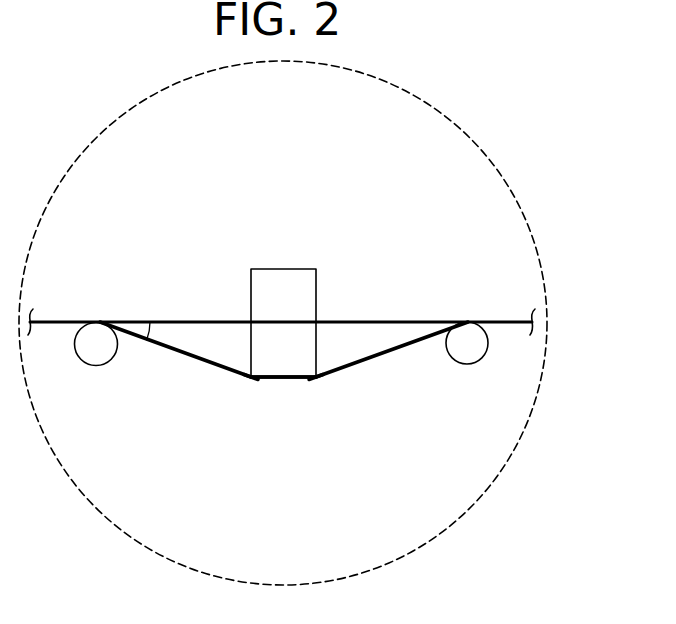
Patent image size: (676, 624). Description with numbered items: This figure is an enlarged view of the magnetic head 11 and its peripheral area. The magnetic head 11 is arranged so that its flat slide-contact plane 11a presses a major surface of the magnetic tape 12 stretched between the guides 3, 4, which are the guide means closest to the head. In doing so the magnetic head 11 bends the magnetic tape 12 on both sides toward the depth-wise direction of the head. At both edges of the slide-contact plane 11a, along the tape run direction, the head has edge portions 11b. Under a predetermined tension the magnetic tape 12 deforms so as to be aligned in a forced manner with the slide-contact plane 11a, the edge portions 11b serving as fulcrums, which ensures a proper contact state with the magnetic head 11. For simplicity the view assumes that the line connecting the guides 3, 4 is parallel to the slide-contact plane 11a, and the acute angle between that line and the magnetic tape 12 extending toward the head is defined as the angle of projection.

The guide 3 is at (97, 358).
The guide 4 is at (472, 360).
The magnetic head 11 is at (285, 278).
The slide-contact plane 11a is at (282, 380).
The edge portions 11b is at (250, 379).
The magnetic tape 12 is at (403, 350).